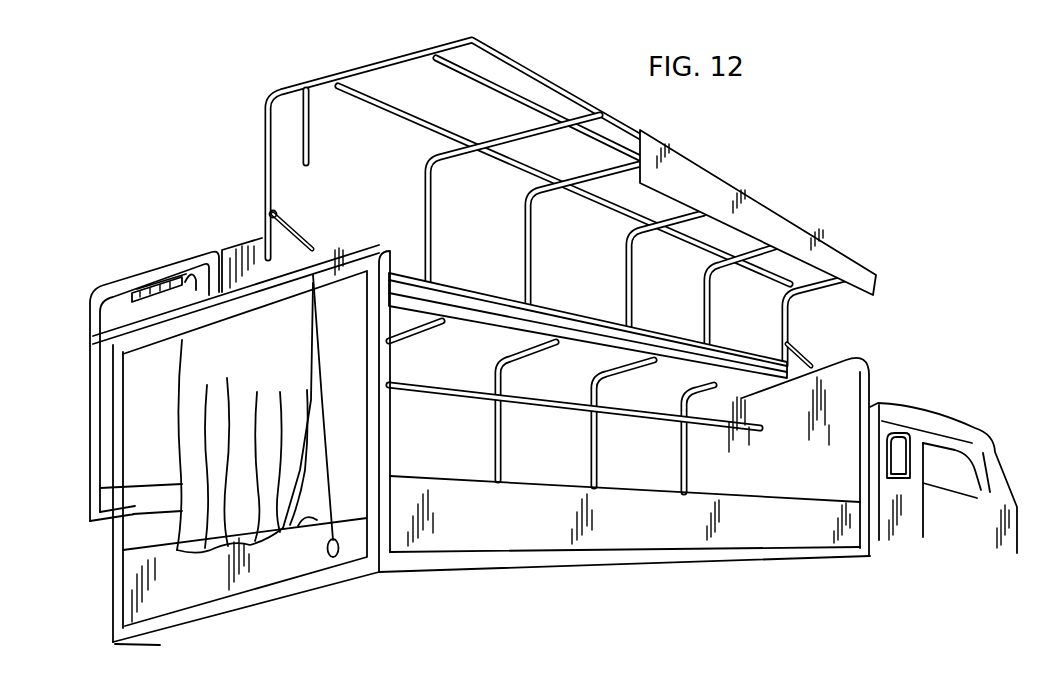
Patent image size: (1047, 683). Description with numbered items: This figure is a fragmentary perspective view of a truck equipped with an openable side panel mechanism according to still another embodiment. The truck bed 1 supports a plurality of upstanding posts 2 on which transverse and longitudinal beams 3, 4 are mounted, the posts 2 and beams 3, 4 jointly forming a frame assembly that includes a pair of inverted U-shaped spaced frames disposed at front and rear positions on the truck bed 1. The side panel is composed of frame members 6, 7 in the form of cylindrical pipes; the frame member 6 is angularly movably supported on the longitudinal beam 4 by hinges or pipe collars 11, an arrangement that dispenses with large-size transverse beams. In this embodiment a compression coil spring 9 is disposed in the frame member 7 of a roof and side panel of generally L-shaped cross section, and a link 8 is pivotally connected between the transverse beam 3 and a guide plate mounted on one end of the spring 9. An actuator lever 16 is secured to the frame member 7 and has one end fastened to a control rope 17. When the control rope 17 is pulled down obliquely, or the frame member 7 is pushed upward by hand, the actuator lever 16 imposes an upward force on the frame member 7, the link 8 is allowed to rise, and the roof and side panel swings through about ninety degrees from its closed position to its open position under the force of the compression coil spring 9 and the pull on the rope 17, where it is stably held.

The truck bed 1 is at (550, 541).
The upstanding post 2 is at (390, 441).
The transverse beam 3 is at (364, 250).
The longitudinal beam 4 is at (477, 326).
The frame member 6 is at (473, 294).
The frame member 7 is at (263, 119).
The link 8 is at (291, 236).
The compression coil spring 9 is at (347, 403).
The hinge or pipe collar 11 is at (874, 279).
The actuator lever 16 is at (273, 303).
The control rope 17 is at (313, 535).